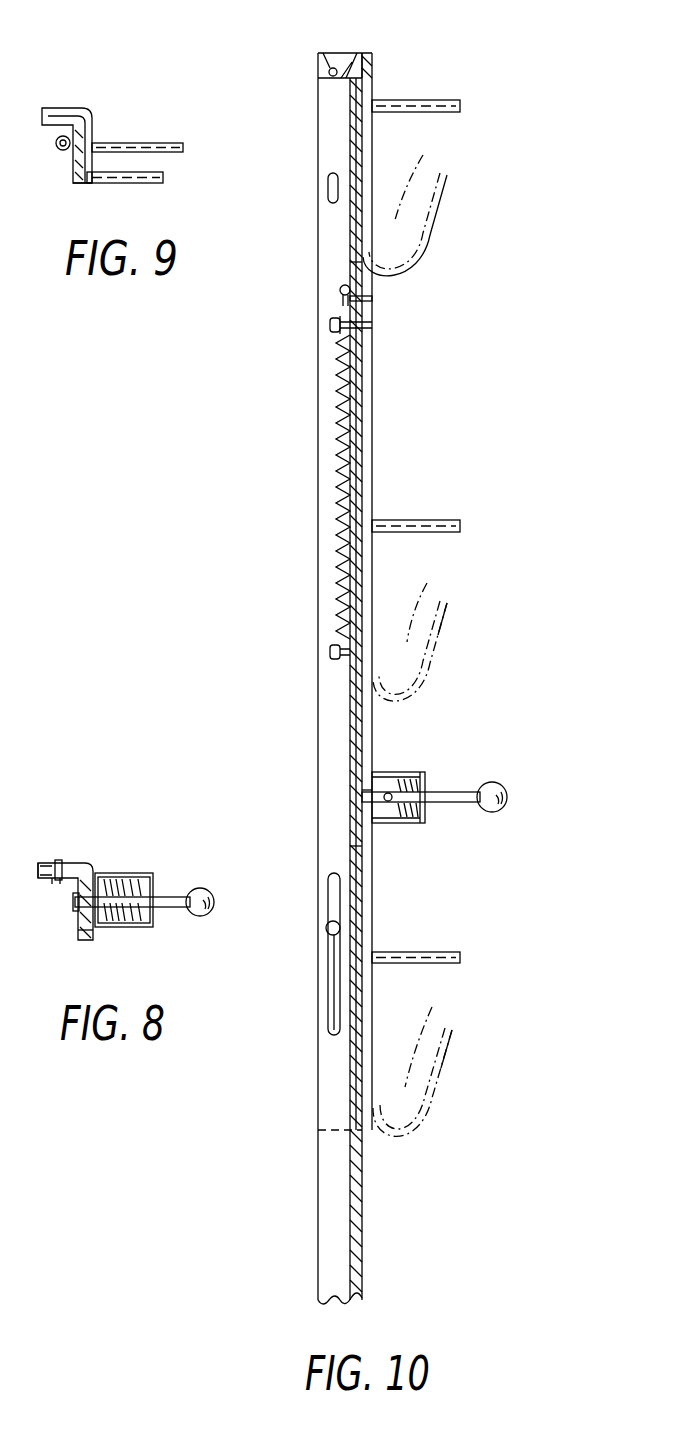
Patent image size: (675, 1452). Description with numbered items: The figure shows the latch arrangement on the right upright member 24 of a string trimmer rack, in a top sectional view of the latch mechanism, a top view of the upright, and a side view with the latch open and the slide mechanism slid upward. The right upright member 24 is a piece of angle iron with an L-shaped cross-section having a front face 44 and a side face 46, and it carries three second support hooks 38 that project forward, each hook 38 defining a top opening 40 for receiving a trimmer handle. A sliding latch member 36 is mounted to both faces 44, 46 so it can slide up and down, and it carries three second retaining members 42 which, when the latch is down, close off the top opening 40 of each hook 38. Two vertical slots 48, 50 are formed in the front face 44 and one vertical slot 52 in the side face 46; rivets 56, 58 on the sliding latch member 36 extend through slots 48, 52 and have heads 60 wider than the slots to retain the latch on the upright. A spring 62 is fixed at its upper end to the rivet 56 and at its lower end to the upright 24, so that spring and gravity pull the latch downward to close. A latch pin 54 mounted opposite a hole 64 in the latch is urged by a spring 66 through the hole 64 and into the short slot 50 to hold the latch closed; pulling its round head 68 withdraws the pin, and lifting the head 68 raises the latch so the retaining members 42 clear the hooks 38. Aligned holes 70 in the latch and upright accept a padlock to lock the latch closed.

In FIG. 9, the right upright member 24 is at (78, 184).
In FIG. 8, the right upright member 24 is at (42, 880).
In FIG. 10, the right upright member 24 is at (358, 53).
In FIG. 9, the sliding latch member 36 is at (62, 108).
In FIG. 8, the sliding latch member 36 is at (85, 862).
In FIG. 10, the sliding latch member 36 is at (373, 62).
In FIG. 9, the second support hooks 38 is at (165, 175).
In FIG. 10, the second support hooks 38 is at (452, 198).
In FIG. 10, the top opening 40 is at (421, 603).
In FIG. 9, the second retaining members 42 is at (157, 143).
In FIG. 10, the second retaining members 42 is at (462, 100).
In FIG. 10, the front face 44 is at (363, 1203).
In FIG. 10, the side face 46 is at (318, 1214).
In FIG. 10, the vertical slot 48 is at (348, 268).
In FIG. 10, the short slot 50 is at (355, 846).
In FIG. 8, the vertical slot 52 is at (42, 862).
In FIG. 10, the vertical slot 52 is at (333, 1006).
In FIG. 8, the latch pin 54 is at (180, 897).
In FIG. 10, the latch pin 54 is at (452, 792).
In FIG. 10, the rivet 56 is at (364, 298).
In FIG. 8, the rivet 58 is at (58, 861).
In FIG. 10, the rivet 58 is at (325, 930).
In FIG. 8, the heads 60 is at (58, 881).
In FIG. 10, the heads 60 is at (340, 292).
In FIG. 9, the spring 62 is at (58, 150).
In FIG. 10, the spring 62 is at (342, 487).
In FIG. 8, the hole 64 is at (78, 932).
In FIG. 10, the hole 64 is at (372, 790).
In FIG. 8, the spring 66 is at (130, 873).
In FIG. 10, the spring 66 is at (408, 820).
In FIG. 8, the round head 68 is at (209, 893).
In FIG. 10, the round head 68 is at (494, 782).
In FIG. 10, the aligned holes 70 is at (323, 54).